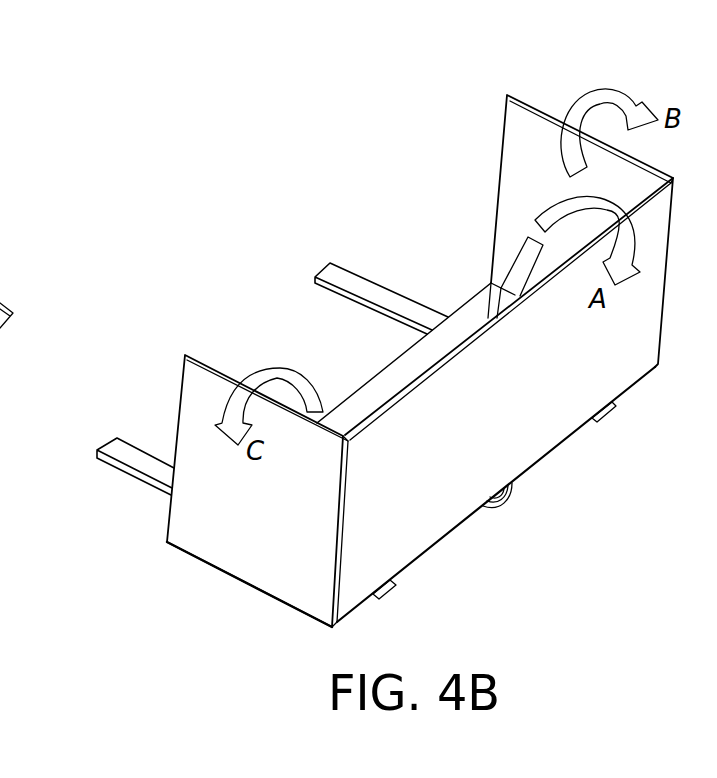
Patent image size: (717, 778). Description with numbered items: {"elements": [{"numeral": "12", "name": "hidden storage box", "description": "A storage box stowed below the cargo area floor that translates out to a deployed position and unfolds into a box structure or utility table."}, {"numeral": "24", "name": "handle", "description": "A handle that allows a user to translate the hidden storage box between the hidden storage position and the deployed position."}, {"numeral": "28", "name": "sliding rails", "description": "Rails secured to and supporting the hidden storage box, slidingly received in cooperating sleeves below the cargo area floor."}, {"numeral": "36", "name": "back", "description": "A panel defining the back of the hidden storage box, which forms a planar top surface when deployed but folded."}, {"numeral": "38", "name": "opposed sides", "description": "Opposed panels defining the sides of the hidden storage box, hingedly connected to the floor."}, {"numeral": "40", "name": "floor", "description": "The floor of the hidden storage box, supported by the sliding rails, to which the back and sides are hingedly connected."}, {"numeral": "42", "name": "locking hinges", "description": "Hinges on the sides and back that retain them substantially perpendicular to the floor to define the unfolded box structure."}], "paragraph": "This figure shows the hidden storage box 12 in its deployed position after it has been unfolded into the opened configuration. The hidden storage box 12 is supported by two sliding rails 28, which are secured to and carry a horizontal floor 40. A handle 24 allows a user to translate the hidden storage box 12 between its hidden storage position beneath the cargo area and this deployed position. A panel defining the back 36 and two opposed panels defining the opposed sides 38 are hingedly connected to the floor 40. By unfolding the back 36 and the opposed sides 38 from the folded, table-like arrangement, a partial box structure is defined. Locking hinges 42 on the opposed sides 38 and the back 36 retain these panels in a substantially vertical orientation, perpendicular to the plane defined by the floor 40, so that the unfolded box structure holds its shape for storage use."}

The stand assembly 12 is at (162, 583).
The feet 24 is at (508, 503).
The cross bars 28 is at (330, 263).
The box body 36 is at (537, 420).
The end panels 38 is at (518, 110).
The back wall 40 is at (385, 382).
The tab 42 is at (523, 262).